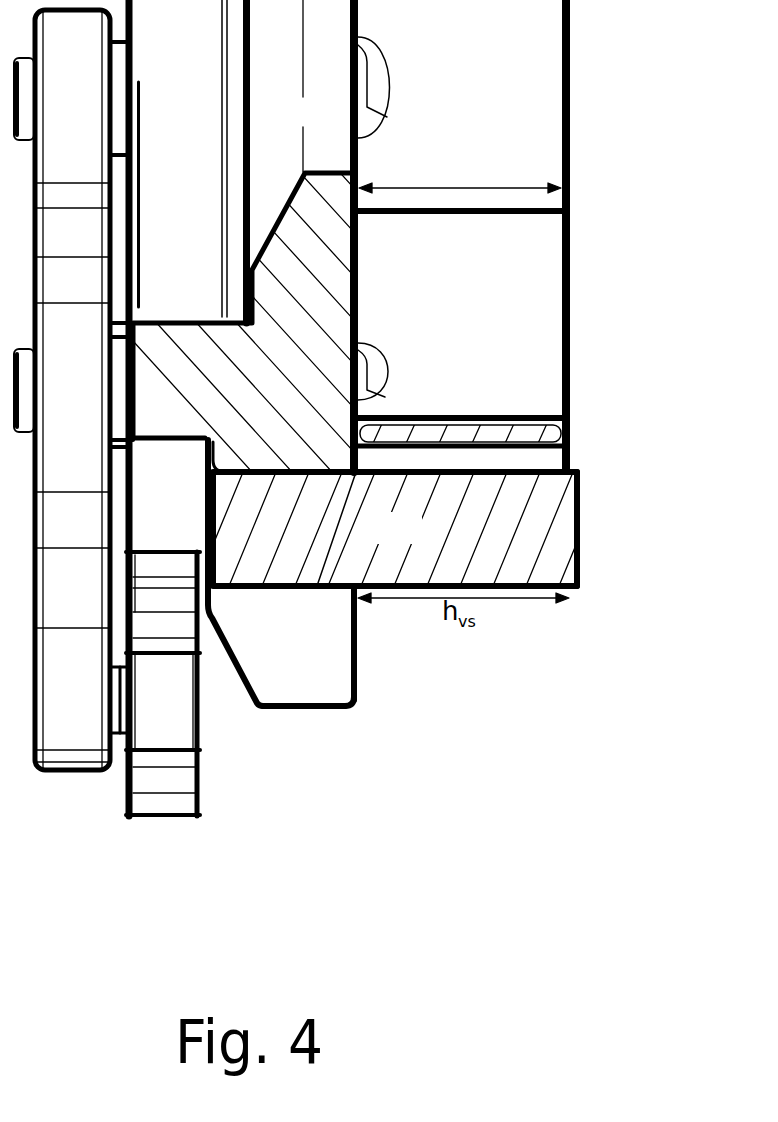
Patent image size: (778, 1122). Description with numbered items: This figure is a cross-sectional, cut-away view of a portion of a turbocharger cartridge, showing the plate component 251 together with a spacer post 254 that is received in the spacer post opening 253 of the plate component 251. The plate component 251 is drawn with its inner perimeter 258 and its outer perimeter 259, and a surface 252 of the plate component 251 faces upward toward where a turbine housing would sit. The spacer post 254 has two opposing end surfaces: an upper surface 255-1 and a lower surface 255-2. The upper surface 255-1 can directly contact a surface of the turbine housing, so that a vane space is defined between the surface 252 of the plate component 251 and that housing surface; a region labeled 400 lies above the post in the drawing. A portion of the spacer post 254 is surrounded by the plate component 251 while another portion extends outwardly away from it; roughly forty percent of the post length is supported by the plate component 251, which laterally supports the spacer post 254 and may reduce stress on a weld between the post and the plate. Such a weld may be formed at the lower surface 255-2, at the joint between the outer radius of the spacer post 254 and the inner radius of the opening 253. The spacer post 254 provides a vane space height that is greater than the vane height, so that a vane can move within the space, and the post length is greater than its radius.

The valve chamber 400 is at (527, 128).
The inner perimeter 258 is at (338, 172).
The spacer post opening 253 is at (217, 465).
The spacer post 254 is at (419, 541).
The lower surface 255-2 is at (212, 530).
The upper surface 255-1 is at (571, 537).
The plate component 251 is at (307, 651).
The surface 252 is at (353, 632).
The outer perimeter 259 is at (317, 705).